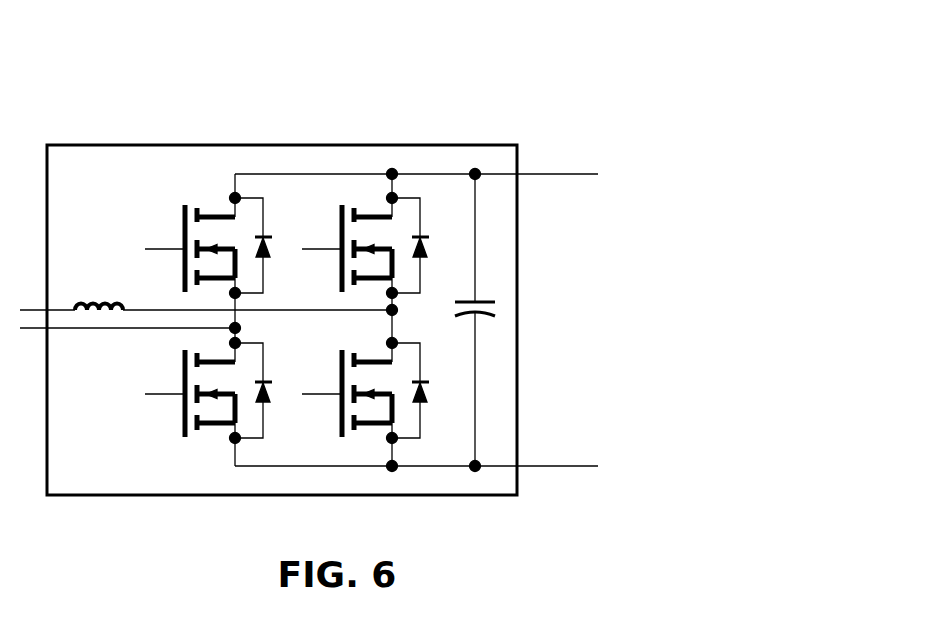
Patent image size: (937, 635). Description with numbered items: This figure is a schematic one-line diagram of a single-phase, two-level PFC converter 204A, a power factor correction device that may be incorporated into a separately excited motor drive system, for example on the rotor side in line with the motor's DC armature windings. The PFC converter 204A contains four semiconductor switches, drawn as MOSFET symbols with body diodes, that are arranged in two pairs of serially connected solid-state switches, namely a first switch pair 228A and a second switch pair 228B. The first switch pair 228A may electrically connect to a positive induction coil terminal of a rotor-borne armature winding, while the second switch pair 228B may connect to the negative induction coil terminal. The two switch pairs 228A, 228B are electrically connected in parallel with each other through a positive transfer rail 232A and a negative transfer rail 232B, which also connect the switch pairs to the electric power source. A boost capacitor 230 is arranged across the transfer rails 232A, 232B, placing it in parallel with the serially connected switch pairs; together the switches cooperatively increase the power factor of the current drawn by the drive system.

The single-phase, 2-level PFC converter 204A is at (636, 83).
The first switch pair 228A is at (203, 170).
The second switch pair 228B is at (359, 170).
The boost capacitor 230 is at (488, 298).
The positive transfer rail 232A is at (563, 175).
The negative transfer rail 232B is at (563, 467).